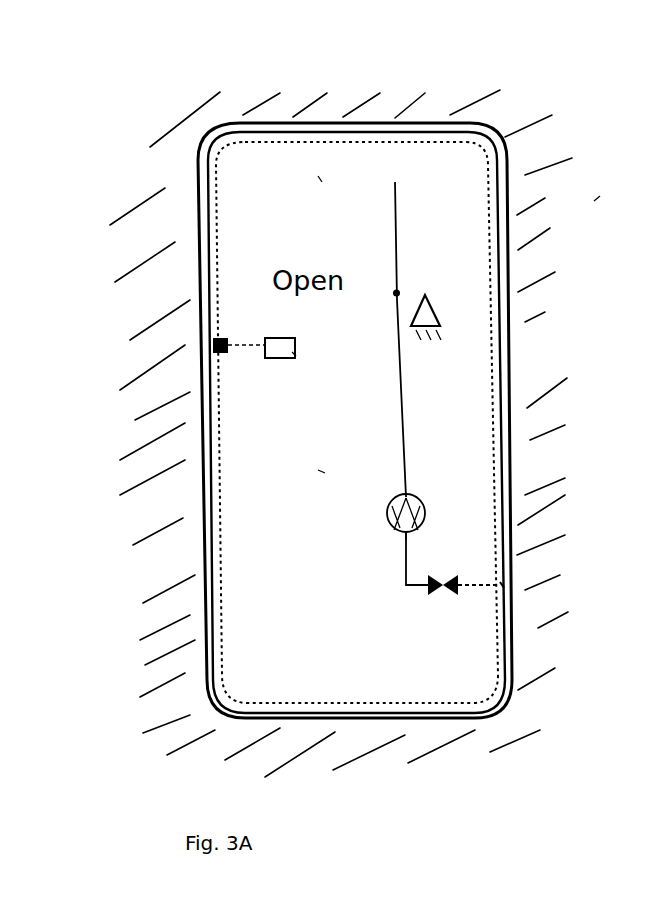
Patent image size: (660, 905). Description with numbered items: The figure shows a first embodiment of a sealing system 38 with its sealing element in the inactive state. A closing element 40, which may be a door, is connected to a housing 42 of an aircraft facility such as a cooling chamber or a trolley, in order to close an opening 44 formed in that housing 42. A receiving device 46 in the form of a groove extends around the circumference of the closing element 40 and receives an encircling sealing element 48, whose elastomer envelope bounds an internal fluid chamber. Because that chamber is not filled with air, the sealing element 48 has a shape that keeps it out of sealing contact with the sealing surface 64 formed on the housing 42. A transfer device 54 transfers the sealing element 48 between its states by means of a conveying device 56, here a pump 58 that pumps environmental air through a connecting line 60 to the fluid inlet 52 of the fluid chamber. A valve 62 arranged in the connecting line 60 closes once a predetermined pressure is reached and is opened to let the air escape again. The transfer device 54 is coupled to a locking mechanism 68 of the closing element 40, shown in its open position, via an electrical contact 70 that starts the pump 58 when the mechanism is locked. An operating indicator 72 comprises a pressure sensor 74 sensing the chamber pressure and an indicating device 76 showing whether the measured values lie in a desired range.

The sealing system 38 is at (598, 200).
The closing element 40 is at (320, 180).
The housing of the aircraft facility 42 is at (546, 300).
The opening 44 is at (505, 390).
The receiving device 46 is at (495, 520).
The sealing element 48 is at (505, 582).
The fluid inlet 52 is at (498, 590).
The transfer device 54 is at (320, 472).
The conveying device 56 is at (434, 538).
The pump 58 is at (391, 516).
The connecting line 60 is at (401, 570).
The valve 62 is at (440, 593).
The sealing surface 64 is at (504, 462).
The locking mechanism 68 is at (410, 225).
The electrical contact 70 is at (426, 296).
The operating indicator 72 is at (318, 336).
The pressure sensor 74 is at (222, 336).
The indicating device 76 is at (295, 358).